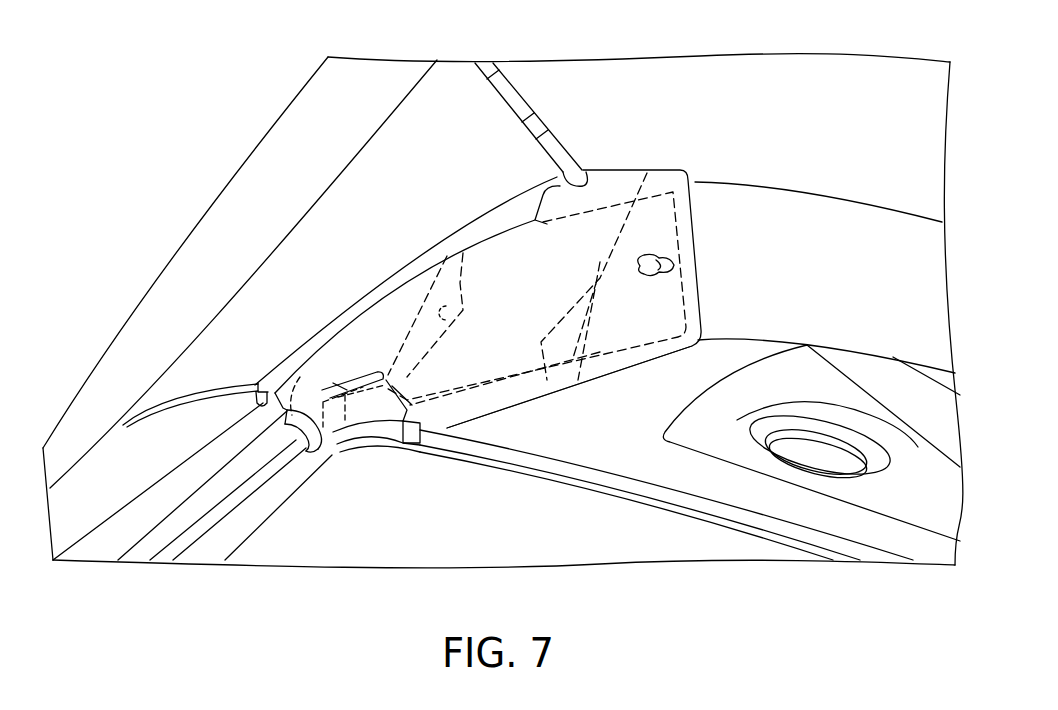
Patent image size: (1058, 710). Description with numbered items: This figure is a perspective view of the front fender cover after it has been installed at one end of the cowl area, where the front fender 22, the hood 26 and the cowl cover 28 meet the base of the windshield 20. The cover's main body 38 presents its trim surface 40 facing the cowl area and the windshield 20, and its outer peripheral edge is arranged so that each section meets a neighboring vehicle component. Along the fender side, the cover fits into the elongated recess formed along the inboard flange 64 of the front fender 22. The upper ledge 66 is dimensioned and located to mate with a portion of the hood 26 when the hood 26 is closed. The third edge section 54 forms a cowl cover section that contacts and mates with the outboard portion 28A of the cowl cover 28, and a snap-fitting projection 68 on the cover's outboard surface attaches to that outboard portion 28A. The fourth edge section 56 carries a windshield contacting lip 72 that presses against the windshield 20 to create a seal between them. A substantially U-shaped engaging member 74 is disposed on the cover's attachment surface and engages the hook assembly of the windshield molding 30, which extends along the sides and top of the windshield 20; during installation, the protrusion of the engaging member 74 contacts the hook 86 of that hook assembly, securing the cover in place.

The windshield 20 is at (431, 540).
The front fender 22 is at (277, 176).
The hood 26 is at (836, 107).
The cowl cover 28 is at (527, 472).
The outboard portion of the cowl cover 28A is at (583, 432).
The windshield molding 30 is at (165, 511).
The main body 38 is at (703, 295).
The trim surface 40 is at (510, 260).
The third edge section 54 is at (619, 368).
The fourth edge section 56 is at (387, 447).
The flange 64 is at (383, 283).
The upper ledge 66 is at (598, 195).
The snap-fitting projection 68 is at (670, 256).
The windshield contacting lip 72 is at (347, 455).
The engaging member 74 is at (300, 380).
The hook 86 is at (357, 365).